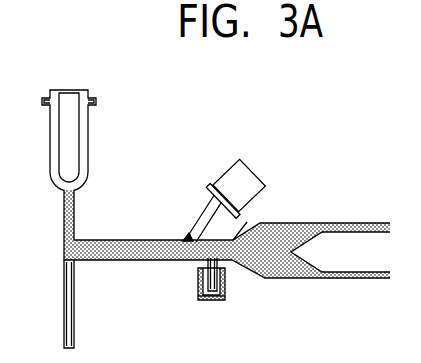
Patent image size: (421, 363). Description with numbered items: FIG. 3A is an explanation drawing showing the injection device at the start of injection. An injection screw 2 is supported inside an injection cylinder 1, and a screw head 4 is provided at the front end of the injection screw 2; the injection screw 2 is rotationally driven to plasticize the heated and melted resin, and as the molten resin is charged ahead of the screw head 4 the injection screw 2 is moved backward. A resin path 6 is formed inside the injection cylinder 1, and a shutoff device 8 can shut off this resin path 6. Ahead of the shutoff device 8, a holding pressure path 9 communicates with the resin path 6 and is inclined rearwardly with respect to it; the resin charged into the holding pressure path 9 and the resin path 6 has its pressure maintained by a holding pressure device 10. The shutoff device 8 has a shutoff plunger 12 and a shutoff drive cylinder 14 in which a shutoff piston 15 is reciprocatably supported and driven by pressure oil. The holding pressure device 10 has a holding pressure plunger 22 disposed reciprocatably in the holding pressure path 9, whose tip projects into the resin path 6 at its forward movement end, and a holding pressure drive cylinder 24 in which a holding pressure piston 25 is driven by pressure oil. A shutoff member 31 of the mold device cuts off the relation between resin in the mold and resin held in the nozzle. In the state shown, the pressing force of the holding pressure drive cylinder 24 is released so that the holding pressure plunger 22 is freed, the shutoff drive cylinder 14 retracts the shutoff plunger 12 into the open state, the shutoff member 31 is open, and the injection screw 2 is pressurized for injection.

The injection cylinder 1 is at (370, 278).
The injection screw 2 is at (345, 268).
The screw head 4 is at (305, 274).
The resin path 6 is at (217, 240).
The shutoff device 8 is at (210, 307).
The holding pressure path 9 is at (180, 238).
The holding pressure device 10 is at (230, 148).
The shutoff plunger 12 is at (206, 262).
The shutoff drive cylinder 14 is at (225, 280).
The shutoff piston 15 is at (205, 302).
The holding pressure plunger 22 is at (191, 229).
The holding pressure drive cylinder 24 is at (256, 172).
The holding pressure piston 25 is at (217, 185).
The shutoff member 31 is at (75, 307).